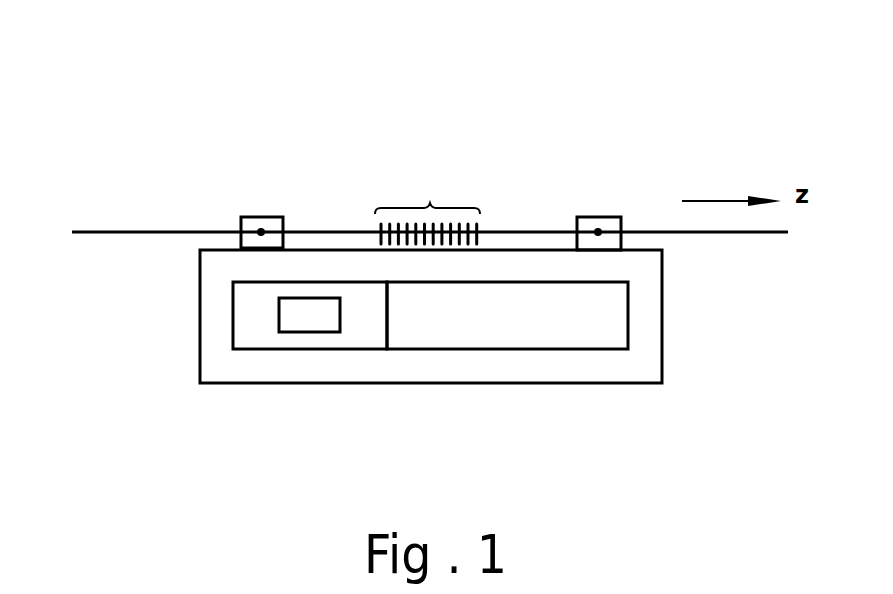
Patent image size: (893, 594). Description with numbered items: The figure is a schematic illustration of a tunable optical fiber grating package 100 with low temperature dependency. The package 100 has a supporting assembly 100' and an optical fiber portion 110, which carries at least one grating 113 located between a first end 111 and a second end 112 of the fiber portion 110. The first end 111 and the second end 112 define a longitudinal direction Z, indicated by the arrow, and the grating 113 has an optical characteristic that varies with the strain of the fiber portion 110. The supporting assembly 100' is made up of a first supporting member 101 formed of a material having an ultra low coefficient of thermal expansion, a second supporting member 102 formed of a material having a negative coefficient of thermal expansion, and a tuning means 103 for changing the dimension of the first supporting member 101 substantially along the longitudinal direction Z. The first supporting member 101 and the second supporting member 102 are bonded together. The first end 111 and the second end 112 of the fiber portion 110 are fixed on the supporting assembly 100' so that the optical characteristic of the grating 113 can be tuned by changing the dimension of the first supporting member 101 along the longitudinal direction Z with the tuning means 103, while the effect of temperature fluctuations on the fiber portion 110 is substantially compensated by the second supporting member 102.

The tunable optical fiber grating package 100 is at (56, 21).
The supporting assembly 100' is at (380, 337).
The first supporting member 101 is at (253, 337).
The second supporting member 102 is at (495, 327).
The tuning means 103 is at (307, 317).
The optical fiber portion 110 is at (510, 232).
The first end 111 is at (261, 232).
The second end 112 is at (598, 232).
The grating 113 is at (429, 204).